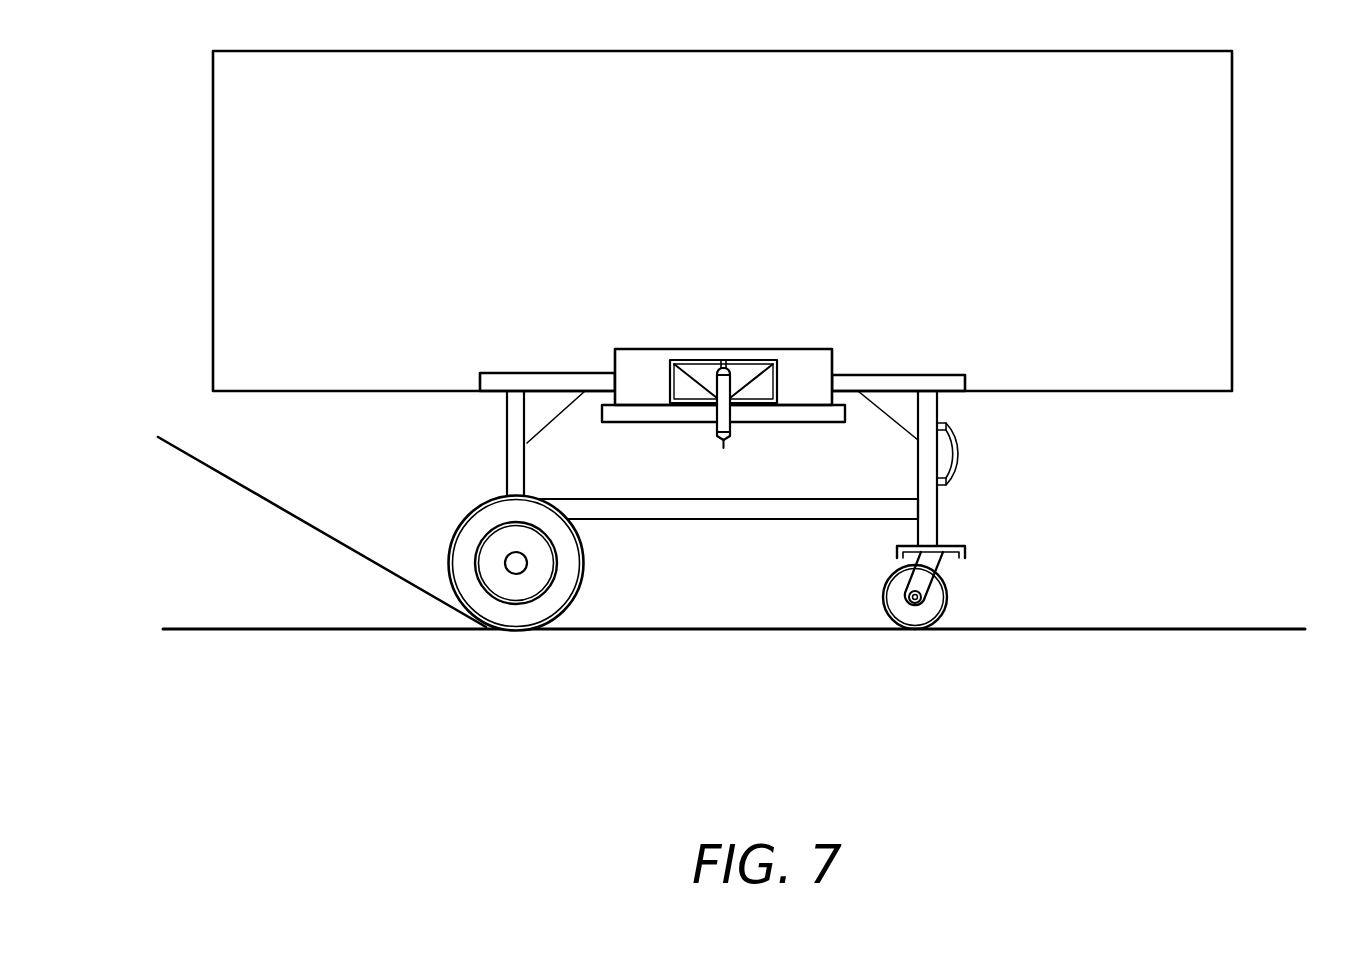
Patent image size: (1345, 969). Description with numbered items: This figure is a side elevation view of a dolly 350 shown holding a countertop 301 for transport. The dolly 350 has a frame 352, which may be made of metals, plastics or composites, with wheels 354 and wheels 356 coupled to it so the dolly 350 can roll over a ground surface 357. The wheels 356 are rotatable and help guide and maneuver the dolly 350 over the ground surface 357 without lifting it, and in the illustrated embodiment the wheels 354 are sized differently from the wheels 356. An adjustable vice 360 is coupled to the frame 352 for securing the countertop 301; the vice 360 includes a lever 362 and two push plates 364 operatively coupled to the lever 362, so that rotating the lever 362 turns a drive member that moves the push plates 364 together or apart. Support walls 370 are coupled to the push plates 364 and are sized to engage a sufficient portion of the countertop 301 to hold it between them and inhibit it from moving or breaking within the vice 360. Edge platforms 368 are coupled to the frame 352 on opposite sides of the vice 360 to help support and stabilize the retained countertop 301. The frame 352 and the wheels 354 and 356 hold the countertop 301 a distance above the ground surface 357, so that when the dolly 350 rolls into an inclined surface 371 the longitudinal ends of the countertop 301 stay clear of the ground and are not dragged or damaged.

The countertop 301 is at (1253, 128).
The dolly 350 is at (758, 493).
The frame 352 is at (939, 505).
The wheels 354 is at (530, 621).
The wheels 356 is at (945, 602).
The ground surface 357 is at (350, 631).
The adjustable vice 360 is at (639, 425).
The lever 362 is at (724, 447).
The push plates 364 is at (683, 382).
The edge platforms 368 is at (492, 391).
The support walls 370 is at (818, 352).
The inclined surface 371 is at (268, 501).